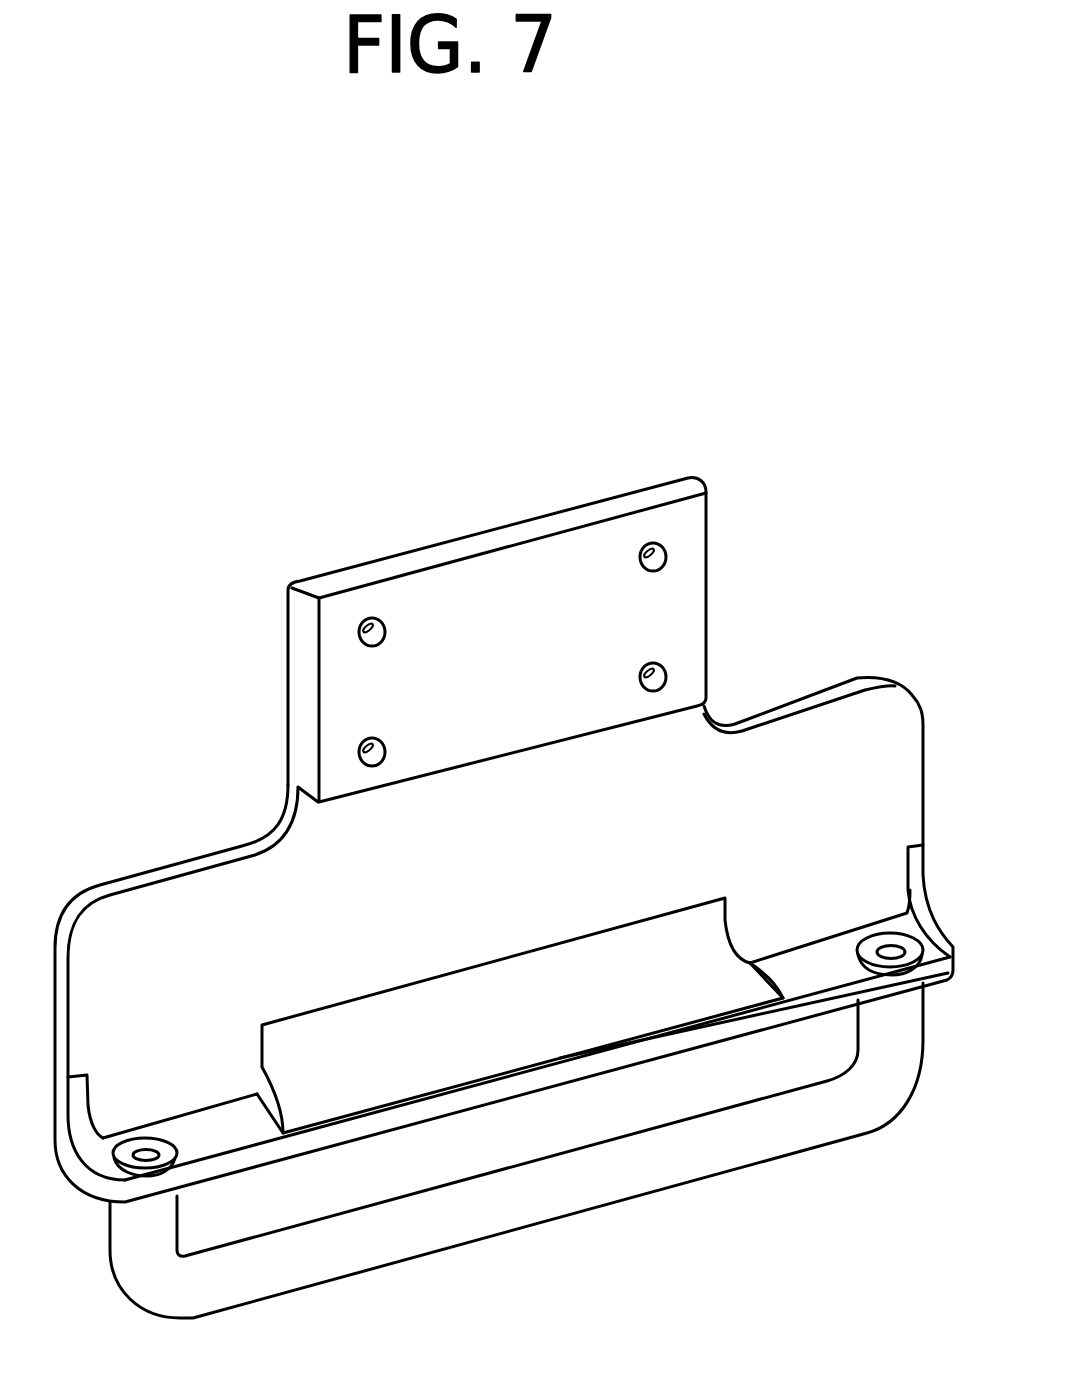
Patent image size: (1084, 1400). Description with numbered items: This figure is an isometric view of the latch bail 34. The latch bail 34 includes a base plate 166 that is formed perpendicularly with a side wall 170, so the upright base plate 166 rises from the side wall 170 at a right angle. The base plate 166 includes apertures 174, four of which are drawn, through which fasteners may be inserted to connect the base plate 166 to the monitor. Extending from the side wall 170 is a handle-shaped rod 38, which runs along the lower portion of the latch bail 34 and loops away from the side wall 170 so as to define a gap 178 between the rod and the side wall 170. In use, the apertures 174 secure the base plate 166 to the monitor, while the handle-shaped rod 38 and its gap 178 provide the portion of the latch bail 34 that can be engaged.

The bracket body 34 is at (756, 652).
The mounting flange 38 is at (473, 1212).
The mounting plate 166 is at (497, 595).
The ledge 170 is at (194, 1130).
The mounting holes 174 is at (384, 621).
The raised panel 178 is at (656, 1105).